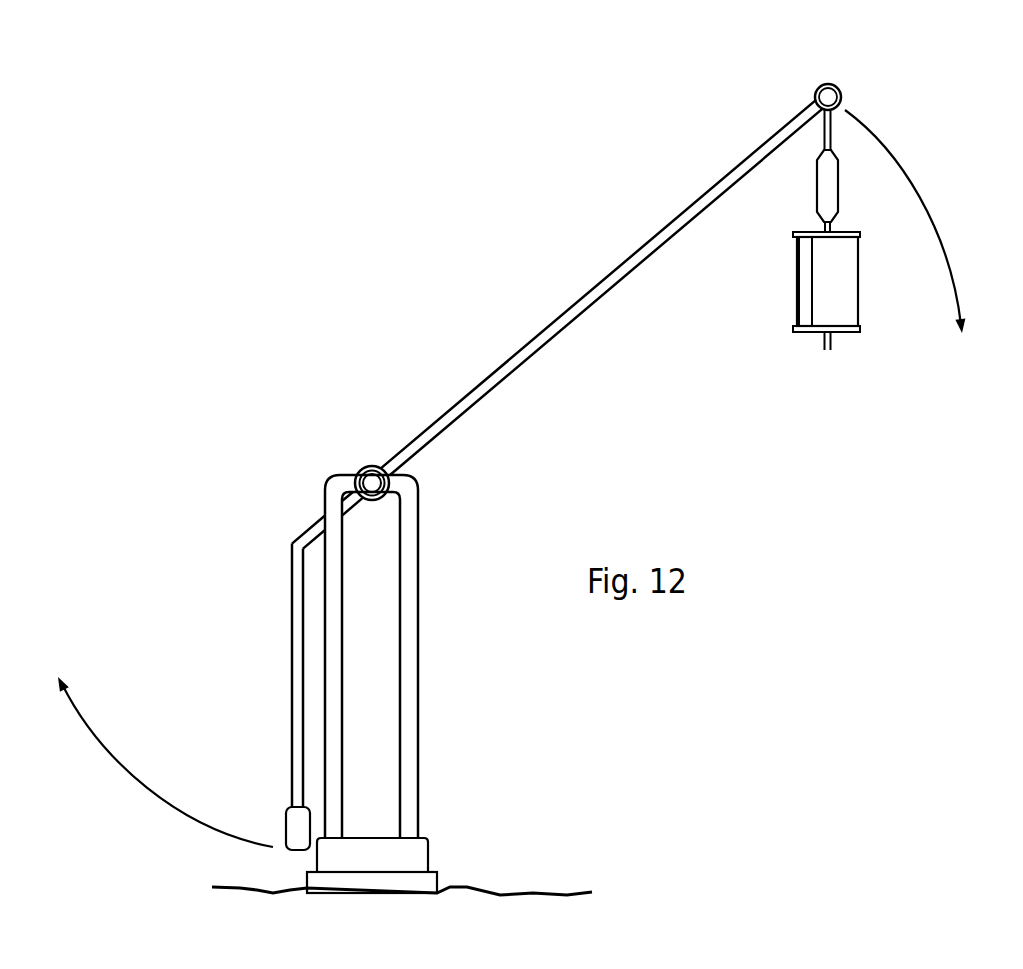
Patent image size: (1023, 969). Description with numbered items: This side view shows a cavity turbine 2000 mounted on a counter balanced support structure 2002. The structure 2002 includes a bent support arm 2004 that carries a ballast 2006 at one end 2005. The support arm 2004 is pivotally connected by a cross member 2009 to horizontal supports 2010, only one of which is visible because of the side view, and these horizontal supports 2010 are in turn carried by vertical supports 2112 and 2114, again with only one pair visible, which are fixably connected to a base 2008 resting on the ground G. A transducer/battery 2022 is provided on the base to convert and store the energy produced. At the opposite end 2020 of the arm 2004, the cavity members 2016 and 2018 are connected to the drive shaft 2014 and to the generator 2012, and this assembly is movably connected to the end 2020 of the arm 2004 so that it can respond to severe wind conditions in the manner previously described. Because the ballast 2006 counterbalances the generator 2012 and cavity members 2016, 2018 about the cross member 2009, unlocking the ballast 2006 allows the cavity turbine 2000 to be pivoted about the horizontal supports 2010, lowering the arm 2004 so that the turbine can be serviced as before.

The cavity turbine 2000 is at (505, 185).
The counter balanced support structure 2002 is at (365, 623).
The bent support arm 2004 is at (535, 333).
The end 2005 is at (292, 788).
The ballast 2006 is at (283, 832).
The base 2008 is at (307, 882).
The cross member 2009 is at (368, 463).
The horizontal supports 2010 is at (350, 474).
The generator 2012 is at (838, 187).
The drive shaft 2014 is at (817, 228).
The cavity member 2016 is at (820, 321).
The cavity member 2018 is at (803, 290).
The end 2020 is at (840, 90).
The transducer/battery 2022 is at (413, 855).
The vertical support 2112 is at (323, 598).
The vertical support 2114 is at (418, 562).
The ground G is at (528, 892).